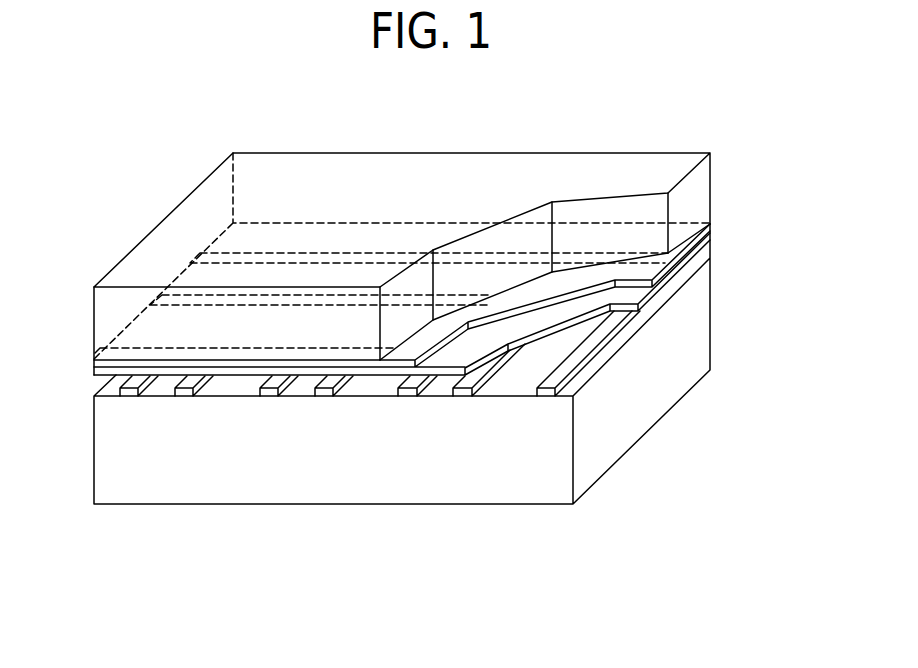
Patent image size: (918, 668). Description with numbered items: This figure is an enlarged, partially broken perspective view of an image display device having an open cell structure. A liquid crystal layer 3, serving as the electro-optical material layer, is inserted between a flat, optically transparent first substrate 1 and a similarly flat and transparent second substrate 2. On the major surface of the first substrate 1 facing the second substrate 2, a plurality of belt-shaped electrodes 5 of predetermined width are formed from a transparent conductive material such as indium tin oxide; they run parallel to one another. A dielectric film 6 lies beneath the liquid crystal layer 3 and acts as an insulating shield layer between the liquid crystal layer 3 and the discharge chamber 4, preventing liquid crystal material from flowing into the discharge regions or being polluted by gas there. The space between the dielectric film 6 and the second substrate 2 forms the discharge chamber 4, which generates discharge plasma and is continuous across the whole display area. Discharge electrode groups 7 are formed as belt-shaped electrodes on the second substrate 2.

The first substrate 1 is at (651, 163).
The second substrate 2 is at (697, 350).
The liquid crystal layer 3 is at (710, 228).
The discharge chamber 4 is at (712, 257).
The belt-shaped electrodes 5 is at (177, 272).
The dielectric film 6 is at (714, 236).
The discharge electrode groups 7 is at (584, 374).